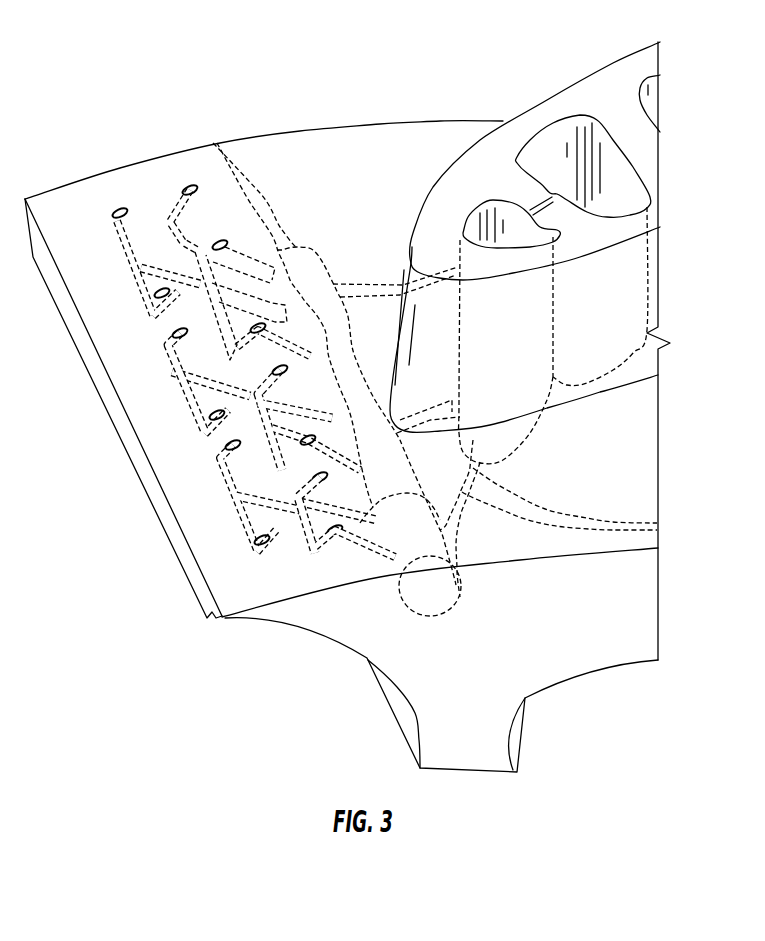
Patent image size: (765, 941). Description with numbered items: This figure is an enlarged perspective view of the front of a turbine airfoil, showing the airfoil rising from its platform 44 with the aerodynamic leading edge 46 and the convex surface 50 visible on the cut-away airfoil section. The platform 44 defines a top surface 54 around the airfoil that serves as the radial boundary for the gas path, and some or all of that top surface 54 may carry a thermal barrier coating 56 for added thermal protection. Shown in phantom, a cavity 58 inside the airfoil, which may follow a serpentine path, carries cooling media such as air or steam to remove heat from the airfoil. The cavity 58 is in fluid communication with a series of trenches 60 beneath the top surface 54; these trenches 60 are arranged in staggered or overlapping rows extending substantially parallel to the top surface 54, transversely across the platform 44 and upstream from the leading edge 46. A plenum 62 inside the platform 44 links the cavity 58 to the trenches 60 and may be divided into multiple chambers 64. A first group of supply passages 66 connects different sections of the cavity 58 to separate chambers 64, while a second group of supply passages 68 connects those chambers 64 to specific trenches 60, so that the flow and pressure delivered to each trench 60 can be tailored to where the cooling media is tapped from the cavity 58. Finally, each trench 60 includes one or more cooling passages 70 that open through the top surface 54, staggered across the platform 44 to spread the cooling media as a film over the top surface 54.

The platform 44 is at (452, 116).
The leading edge 46 is at (408, 262).
The convex surface 50 is at (553, 90).
The top surface 54 is at (335, 180).
The thermal barrier coating 56 is at (305, 150).
The cavity 58 is at (647, 283).
The trenches 60 is at (200, 410).
The plenum 62 is at (380, 597).
The chambers 64 is at (217, 143).
The first group of supply passages 66 is at (657, 527).
The second group of supply passages 68 is at (170, 367).
The cooling passages 70 is at (192, 187).